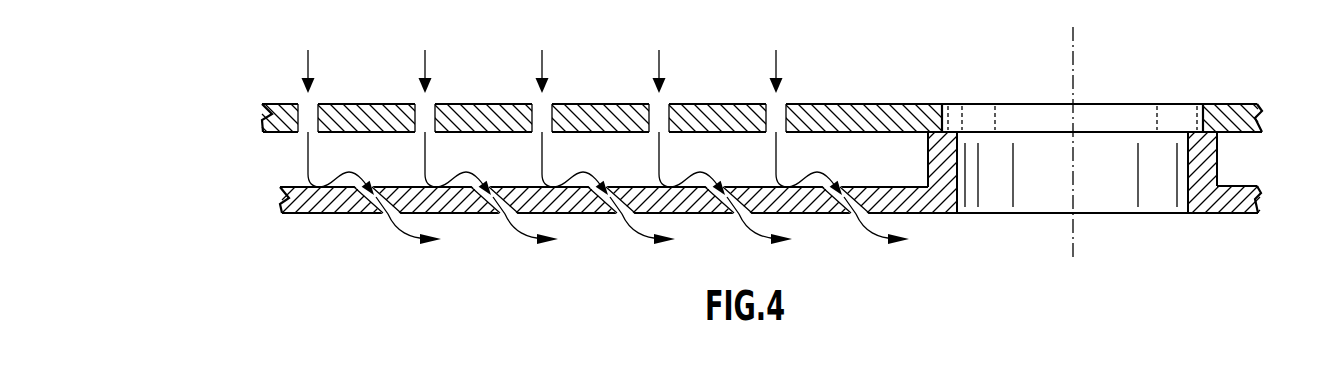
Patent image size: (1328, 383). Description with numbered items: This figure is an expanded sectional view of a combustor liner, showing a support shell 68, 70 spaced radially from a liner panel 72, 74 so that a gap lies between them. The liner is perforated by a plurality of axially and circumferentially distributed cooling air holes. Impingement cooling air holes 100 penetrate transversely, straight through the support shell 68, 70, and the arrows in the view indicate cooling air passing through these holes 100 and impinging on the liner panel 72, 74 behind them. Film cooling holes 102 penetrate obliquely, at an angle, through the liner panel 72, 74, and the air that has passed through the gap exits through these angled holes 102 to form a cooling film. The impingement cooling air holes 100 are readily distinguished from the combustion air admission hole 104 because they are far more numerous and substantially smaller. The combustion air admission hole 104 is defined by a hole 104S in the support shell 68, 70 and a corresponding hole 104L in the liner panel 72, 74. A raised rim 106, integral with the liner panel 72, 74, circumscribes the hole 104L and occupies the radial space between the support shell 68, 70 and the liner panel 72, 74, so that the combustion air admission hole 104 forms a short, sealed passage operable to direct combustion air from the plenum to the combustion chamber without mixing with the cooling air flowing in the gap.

The support shell 68 is at (716, 116).
The support shell 70 is at (266, 118).
The liner panel 72 is at (728, 219).
The liner panel 74 is at (284, 197).
The impingement cooling air holes 100 is at (777, 118).
The film cooling holes 102 is at (838, 200).
The combustion air admission hole 104 is at (1114, 145).
The hole in the support shell 104S is at (960, 121).
The hole in the liner panel 104L is at (1114, 199).
The raised rim 106 is at (1205, 160).